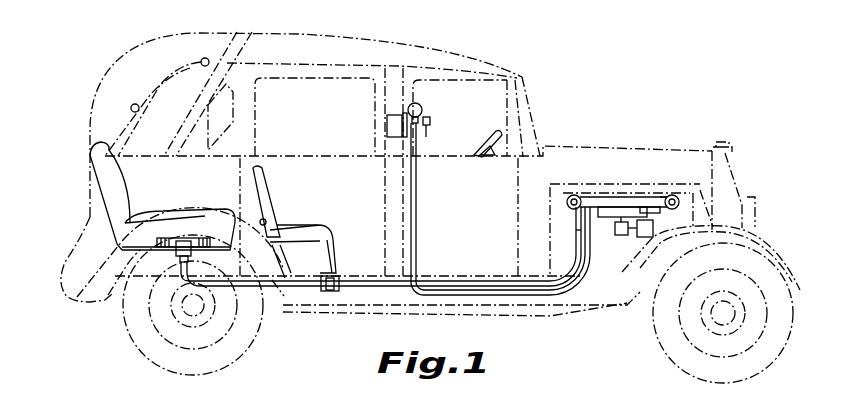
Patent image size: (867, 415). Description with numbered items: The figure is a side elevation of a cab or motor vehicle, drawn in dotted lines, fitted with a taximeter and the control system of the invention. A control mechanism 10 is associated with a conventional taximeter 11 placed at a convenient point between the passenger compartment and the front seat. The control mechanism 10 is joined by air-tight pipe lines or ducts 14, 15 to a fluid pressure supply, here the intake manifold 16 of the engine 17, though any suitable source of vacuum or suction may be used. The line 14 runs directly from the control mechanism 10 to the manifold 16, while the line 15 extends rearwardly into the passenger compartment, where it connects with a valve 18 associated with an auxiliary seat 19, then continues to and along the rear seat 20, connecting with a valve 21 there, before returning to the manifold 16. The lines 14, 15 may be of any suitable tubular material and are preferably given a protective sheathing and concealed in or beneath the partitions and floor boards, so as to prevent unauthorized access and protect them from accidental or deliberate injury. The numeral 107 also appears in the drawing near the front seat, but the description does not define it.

The control mechanism 10 is at (429, 110).
The taximeter 11 is at (393, 126).
The pipe line 14 is at (417, 218).
The pipe line 15 is at (576, 237).
The intake manifold 16 is at (610, 208).
The engine 17 is at (638, 193).
The valve 18 is at (336, 272).
The auxiliary seat 19 is at (307, 225).
The front seat 107 is at (327, 237).
The rear seat 20 is at (207, 203).
The valve 21 is at (170, 240).